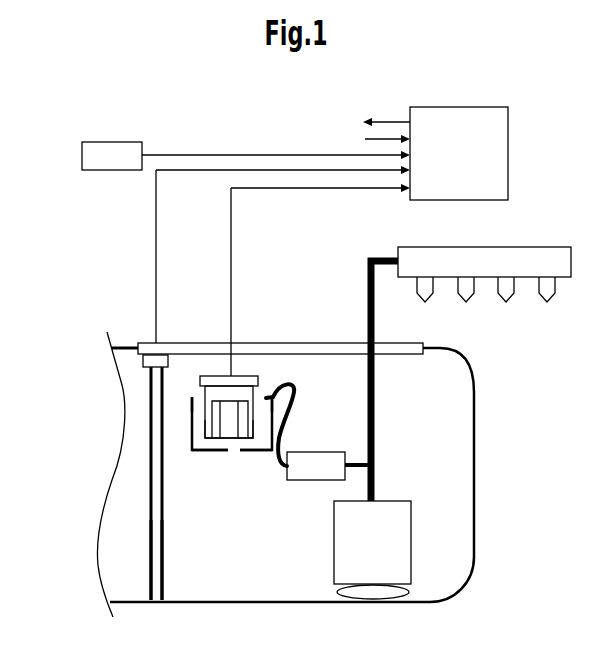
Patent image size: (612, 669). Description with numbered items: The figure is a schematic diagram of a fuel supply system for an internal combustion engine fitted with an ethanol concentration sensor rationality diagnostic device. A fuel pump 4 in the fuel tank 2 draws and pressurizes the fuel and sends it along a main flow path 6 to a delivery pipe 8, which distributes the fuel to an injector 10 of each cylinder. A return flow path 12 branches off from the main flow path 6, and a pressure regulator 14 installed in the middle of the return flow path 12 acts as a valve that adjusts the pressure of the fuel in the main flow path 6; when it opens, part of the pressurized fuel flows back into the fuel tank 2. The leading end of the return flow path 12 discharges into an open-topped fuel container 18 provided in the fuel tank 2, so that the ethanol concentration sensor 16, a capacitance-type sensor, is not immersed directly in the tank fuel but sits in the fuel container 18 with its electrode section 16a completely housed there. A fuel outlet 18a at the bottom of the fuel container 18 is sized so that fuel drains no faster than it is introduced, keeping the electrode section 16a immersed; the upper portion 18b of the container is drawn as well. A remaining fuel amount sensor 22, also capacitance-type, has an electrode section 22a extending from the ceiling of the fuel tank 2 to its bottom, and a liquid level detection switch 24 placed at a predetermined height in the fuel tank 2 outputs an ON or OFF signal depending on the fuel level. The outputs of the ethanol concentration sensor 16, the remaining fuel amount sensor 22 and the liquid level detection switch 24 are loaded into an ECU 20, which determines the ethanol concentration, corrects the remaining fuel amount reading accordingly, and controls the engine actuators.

The fuel tank 2 is at (474, 487).
The fuel pump 4 is at (411, 537).
The main flow path 6 is at (368, 285).
The delivery pipe 8 is at (513, 247).
The injector 10 is at (425, 302).
The return flow path 12 is at (358, 462).
The pressure regulator 14 is at (315, 450).
The ethanol concentration sensor 16 is at (241, 376).
The electrode section 16a is at (203, 432).
The fuel container 18 is at (192, 418).
The fuel outlet 18a is at (228, 452).
The bracket upper portion 18b is at (197, 392).
The ECU 20 is at (508, 138).
The remaining fuel amount sensor 22 is at (143, 362).
The electrode section 22a is at (148, 530).
The liquid level detection switch 24 is at (82, 155).